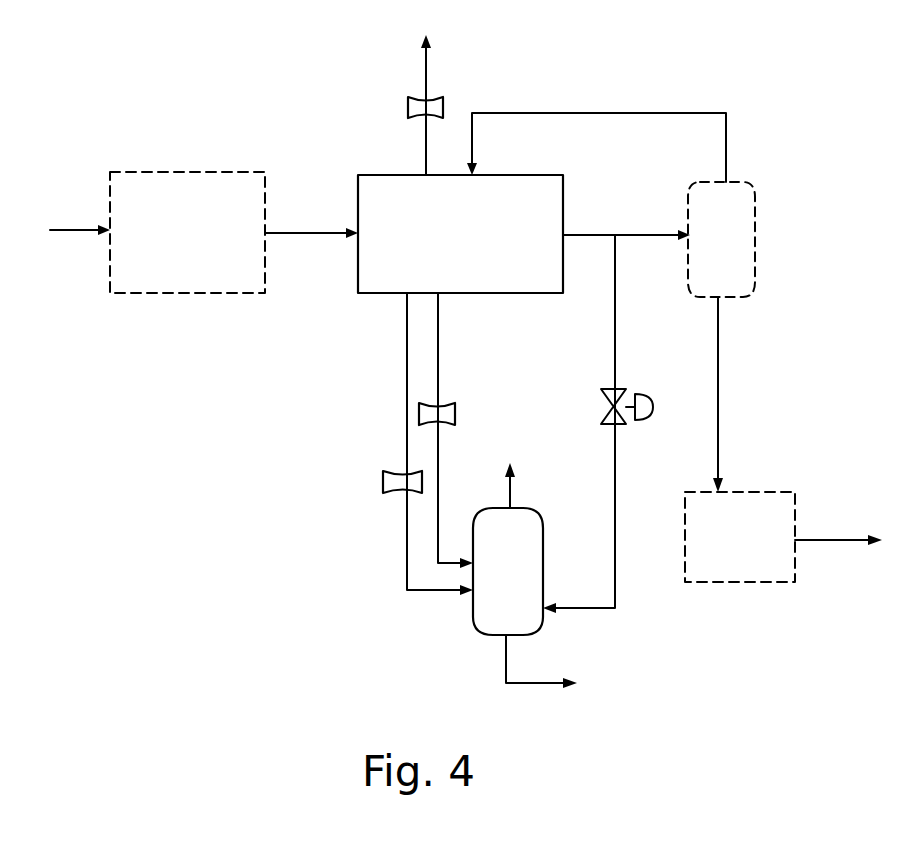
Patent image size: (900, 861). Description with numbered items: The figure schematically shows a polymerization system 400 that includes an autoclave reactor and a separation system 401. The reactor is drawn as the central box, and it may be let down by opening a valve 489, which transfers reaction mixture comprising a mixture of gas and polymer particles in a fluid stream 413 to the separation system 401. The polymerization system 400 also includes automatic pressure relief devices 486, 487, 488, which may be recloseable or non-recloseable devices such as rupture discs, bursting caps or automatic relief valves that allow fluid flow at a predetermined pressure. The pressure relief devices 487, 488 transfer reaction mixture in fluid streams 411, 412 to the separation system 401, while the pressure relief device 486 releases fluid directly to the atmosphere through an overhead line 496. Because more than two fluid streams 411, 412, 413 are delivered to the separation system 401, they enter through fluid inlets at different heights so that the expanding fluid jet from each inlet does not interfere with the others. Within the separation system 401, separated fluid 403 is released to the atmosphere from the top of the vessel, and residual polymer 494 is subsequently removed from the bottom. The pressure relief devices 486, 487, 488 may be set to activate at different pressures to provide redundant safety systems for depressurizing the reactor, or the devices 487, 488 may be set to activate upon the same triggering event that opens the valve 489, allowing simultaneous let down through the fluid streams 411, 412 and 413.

The polymerization system 400 is at (762, 80).
The separation system 401 is at (545, 565).
The separated fluid 403 is at (512, 490).
The fluid stream 411 is at (405, 333).
The fluid stream 412 is at (441, 346).
The fluid stream 413 is at (618, 323).
The pressure relief device 486 is at (407, 105).
The pressure relief device 487 is at (458, 410).
The pressure relief device 488 is at (382, 486).
The valve 489 is at (642, 393).
The residual polymer 494 is at (522, 683).
The overhead stream 496 is at (486, 52).